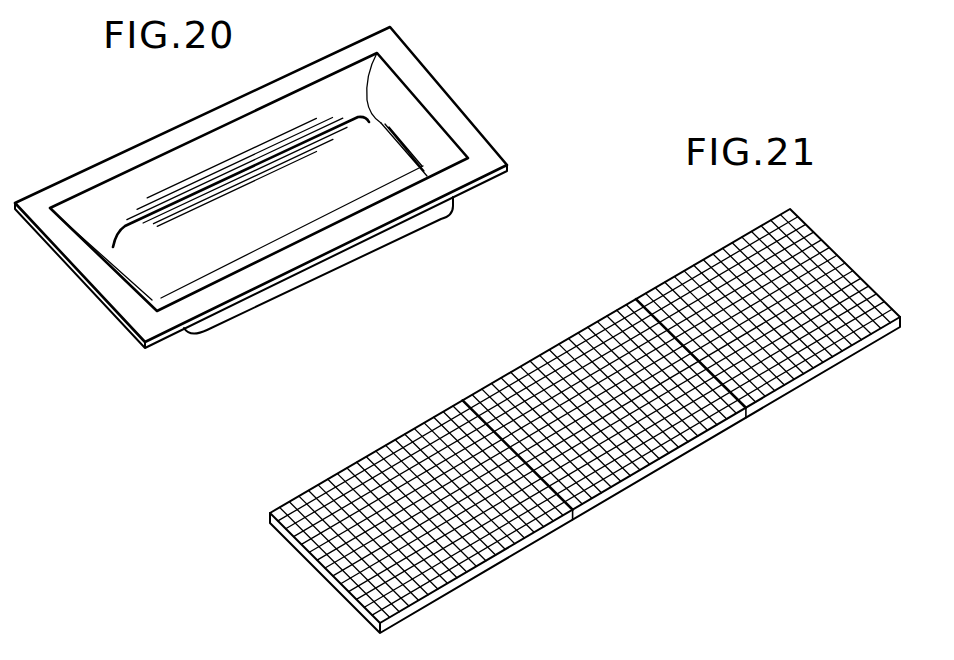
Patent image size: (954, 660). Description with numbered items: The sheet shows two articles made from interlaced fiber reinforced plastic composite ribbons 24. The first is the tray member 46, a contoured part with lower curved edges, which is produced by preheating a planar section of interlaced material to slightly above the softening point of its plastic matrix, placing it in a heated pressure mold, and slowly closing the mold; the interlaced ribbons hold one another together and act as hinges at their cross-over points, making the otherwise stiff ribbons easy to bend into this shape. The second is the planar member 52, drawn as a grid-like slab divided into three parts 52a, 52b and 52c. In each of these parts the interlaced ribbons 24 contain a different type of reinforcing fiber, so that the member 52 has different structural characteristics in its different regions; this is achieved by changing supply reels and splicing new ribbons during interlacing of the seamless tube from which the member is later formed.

In FIG. 20, the tray member 46 is at (125, 159).
In FIG. 21, the member 52 is at (297, 473).
In FIG. 21, the part of the member 52a is at (757, 247).
In FIG. 21, the part of the member 52b is at (552, 362).
In FIG. 21, the part of the member 52c is at (391, 456).
In FIG. 21, the fiber reinforced plastic composite ribbons 24 is at (270, 524).